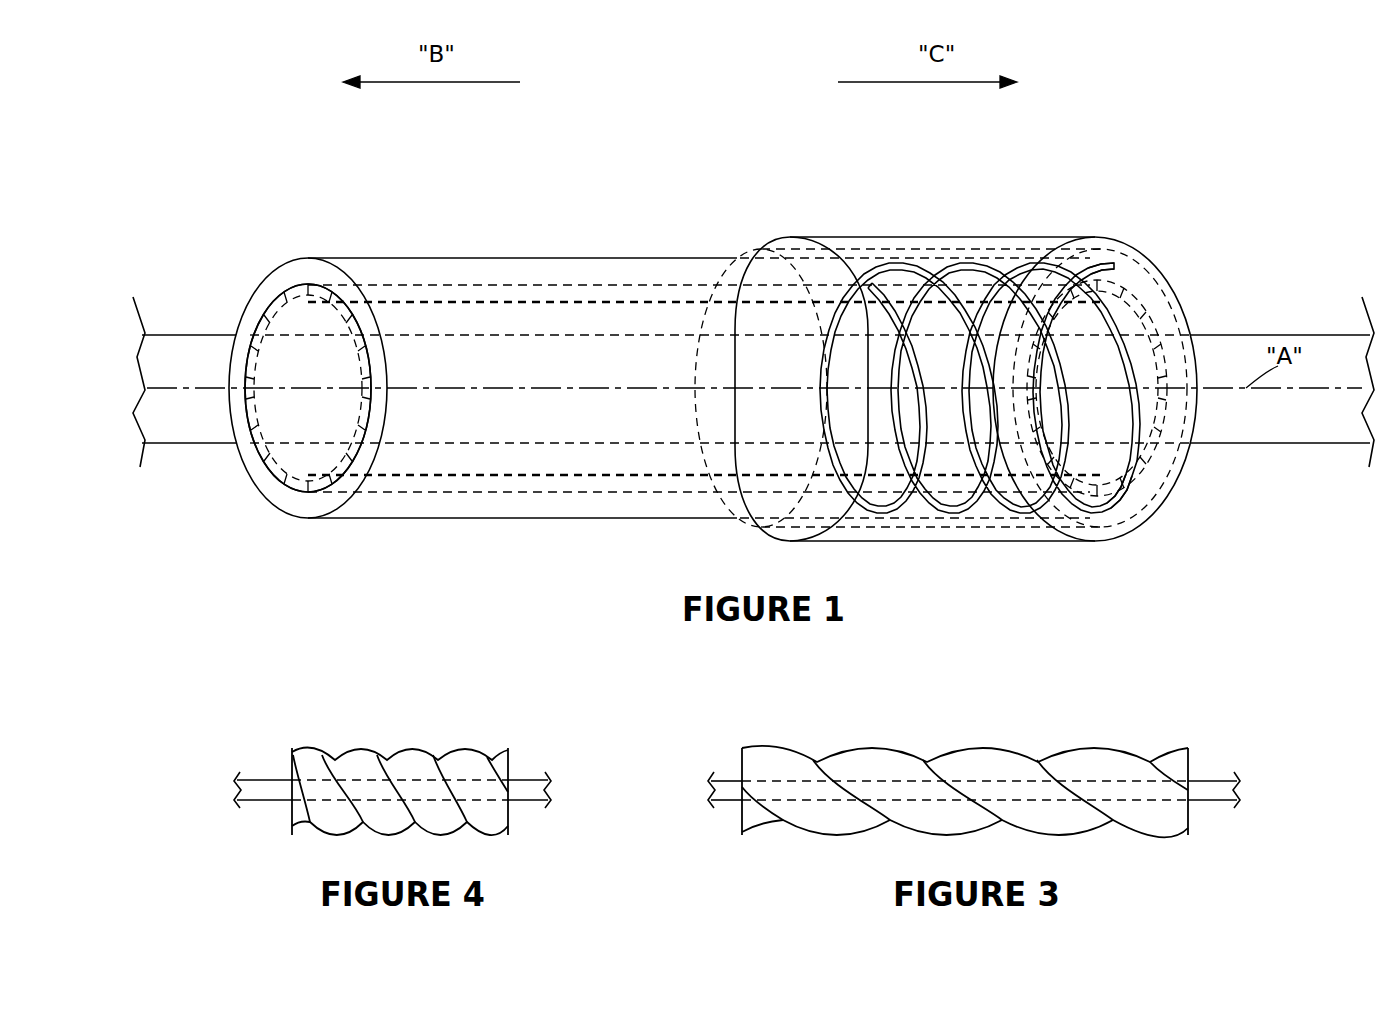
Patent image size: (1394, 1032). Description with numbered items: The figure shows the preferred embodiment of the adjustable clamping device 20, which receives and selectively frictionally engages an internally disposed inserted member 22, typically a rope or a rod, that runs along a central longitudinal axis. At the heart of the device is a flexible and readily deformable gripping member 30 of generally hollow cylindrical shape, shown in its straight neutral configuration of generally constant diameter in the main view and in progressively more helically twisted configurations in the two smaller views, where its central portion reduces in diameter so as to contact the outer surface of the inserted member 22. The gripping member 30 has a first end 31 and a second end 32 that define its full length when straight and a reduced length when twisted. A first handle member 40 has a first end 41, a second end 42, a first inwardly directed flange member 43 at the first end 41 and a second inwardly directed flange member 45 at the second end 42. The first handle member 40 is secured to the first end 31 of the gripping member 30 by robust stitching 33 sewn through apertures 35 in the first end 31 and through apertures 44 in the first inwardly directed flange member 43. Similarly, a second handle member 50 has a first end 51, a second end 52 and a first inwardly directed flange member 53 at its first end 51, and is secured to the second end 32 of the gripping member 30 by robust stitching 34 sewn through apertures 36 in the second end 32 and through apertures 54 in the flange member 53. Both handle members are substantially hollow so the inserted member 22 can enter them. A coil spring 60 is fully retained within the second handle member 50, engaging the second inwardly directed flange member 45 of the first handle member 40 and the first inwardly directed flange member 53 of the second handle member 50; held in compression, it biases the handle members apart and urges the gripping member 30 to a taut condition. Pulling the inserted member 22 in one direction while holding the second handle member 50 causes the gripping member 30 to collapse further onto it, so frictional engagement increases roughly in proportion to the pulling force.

In FIG. 1, the adjustable clamping device 20 is at (1226, 114).
In FIG. 1, the inserted member 22 is at (161, 334).
In FIG. 4, the inserted member 22 is at (525, 788).
In FIG. 3, the inserted member 22 is at (1212, 788).
In FIG. 1, the gripping member 30 is at (585, 463).
In FIG. 4, the gripping member 30 is at (411, 748).
In FIG. 3, the gripping member 30 is at (1096, 748).
In FIG. 1, the first end 31 is at (392, 306).
In FIG. 1, the second end 32 is at (1137, 348).
In FIG. 1, the robust stitching 33 is at (263, 357).
In FIG. 1, the robust stitching 34 is at (1155, 448).
In FIG. 1, the apertures 35 is at (273, 327).
In FIG. 1, the apertures 36 is at (1152, 428).
In FIG. 1, the first handle member 40 is at (513, 258).
In FIG. 1, the first end 41 is at (307, 258).
In FIG. 1, the second end 42 is at (883, 264).
In FIG. 1, the first inwardly directed flange member 43 is at (247, 327).
In FIG. 1, the apertures 44 is at (262, 325).
In FIG. 1, the second inwardly directed flange member 45 is at (857, 270).
In FIG. 1, the second handle member 50 is at (987, 237).
In FIG. 1, the first end 51 is at (784, 237).
In FIG. 1, the second end 52 is at (1110, 240).
In FIG. 1, the first inwardly directed flange member 53 is at (1178, 358).
In FIG. 1, the apertures 54 is at (1134, 497).
In FIG. 1, the coil spring 60 is at (1102, 270).